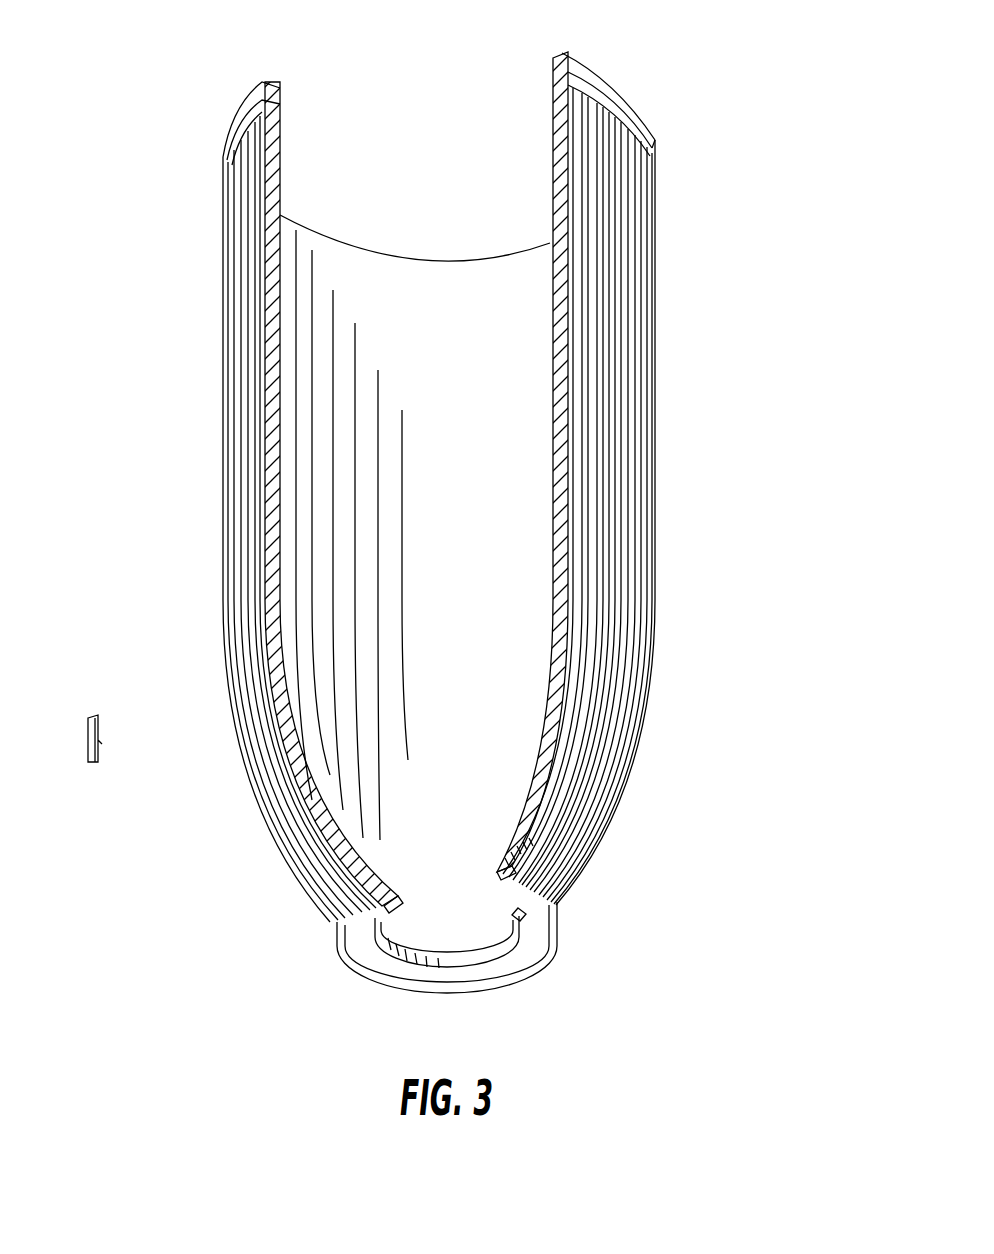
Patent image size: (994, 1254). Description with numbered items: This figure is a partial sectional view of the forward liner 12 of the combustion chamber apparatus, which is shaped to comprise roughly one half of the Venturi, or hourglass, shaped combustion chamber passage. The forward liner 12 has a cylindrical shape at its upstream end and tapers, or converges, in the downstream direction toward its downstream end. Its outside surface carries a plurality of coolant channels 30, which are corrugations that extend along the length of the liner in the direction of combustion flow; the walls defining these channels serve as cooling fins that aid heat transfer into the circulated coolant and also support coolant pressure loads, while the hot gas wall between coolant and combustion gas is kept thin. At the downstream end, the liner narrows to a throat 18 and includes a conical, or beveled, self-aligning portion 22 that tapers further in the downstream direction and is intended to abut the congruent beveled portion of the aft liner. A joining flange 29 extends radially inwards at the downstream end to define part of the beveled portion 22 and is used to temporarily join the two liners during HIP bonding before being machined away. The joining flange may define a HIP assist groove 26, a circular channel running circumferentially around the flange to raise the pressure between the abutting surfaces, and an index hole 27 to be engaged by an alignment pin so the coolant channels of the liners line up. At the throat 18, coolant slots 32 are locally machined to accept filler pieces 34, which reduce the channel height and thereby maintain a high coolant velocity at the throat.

The forward liner 12 is at (520, 525).
The coolant channels 30 is at (640, 495).
The coolant slots 32 is at (343, 873).
The joining flange 29 is at (403, 903).
The throat 18 is at (510, 852).
The self-aligning portion 22 is at (553, 908).
The HIP assist groove 26 is at (337, 923).
The index hole 27 is at (545, 958).
The filler pieces 34 is at (98, 740).